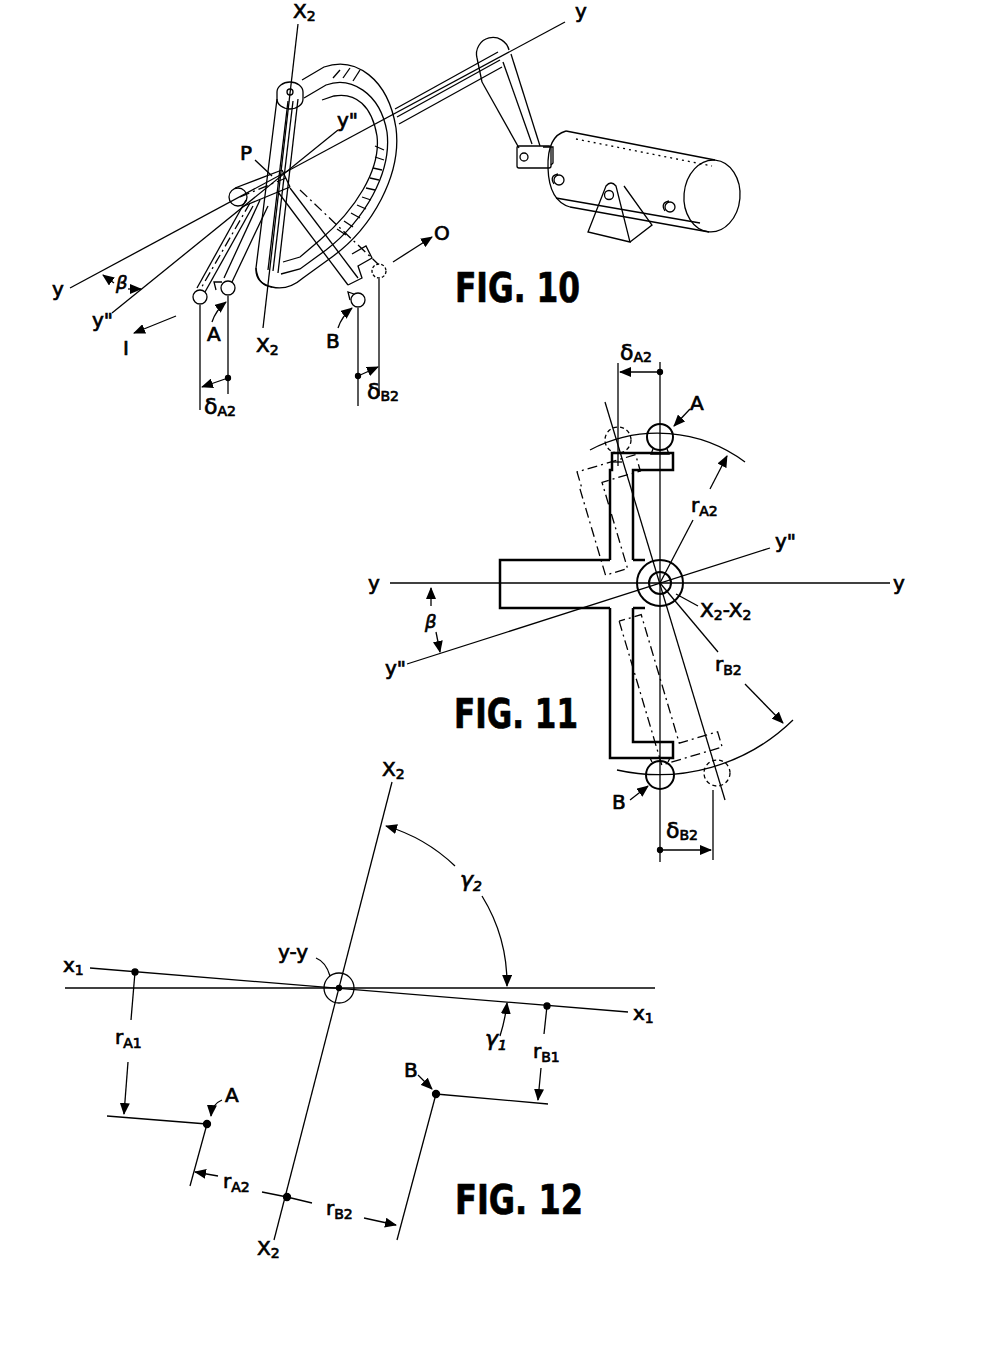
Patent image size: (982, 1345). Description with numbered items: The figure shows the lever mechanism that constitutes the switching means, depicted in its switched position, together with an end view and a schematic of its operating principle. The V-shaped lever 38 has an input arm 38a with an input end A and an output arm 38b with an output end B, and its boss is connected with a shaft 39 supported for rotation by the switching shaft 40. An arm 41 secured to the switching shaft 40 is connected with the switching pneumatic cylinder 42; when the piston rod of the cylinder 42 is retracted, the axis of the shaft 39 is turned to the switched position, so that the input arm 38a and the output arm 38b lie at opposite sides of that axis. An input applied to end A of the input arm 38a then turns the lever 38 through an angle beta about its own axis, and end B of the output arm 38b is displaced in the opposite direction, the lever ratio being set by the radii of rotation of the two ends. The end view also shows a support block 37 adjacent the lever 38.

In FIG. 11, the support block 37 is at (515, 562).
In FIG. 10, the V-shaped lever 38 is at (240, 296).
In FIG. 10, the input arm 38a is at (233, 233).
In FIG. 11, the input arm 38a is at (617, 515).
In FIG. 10, the output arm 38b is at (334, 290).
In FIG. 11, the output arm 38b is at (615, 665).
In FIG. 10, the shaft 39 is at (282, 116).
In FIG. 11, the shaft 39 is at (674, 578).
In FIG. 10, the switching shaft 40 is at (438, 88).
In FIG. 10, the arm 41 is at (518, 98).
In FIG. 10, the switching pneumatic cylinder 42 is at (620, 150).